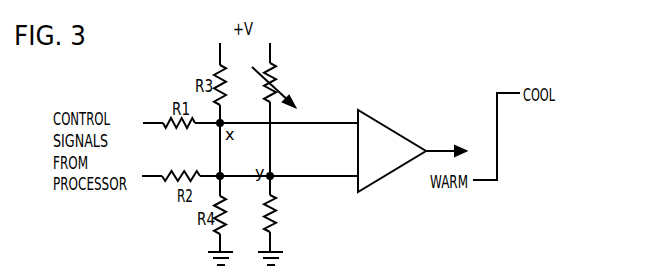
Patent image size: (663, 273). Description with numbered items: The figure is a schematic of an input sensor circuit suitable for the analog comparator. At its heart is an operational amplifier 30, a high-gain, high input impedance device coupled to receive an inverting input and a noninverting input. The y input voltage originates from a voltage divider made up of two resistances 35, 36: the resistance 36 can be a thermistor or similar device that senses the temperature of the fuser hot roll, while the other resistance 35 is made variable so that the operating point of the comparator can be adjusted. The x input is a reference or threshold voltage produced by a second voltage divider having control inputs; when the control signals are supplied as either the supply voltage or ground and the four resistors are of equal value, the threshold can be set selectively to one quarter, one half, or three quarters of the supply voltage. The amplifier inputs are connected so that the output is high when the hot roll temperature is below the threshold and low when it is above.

The operational amplifier 30 is at (375, 117).
The variable resistance 35 is at (275, 72).
The thermistor resistance 36 is at (272, 232).